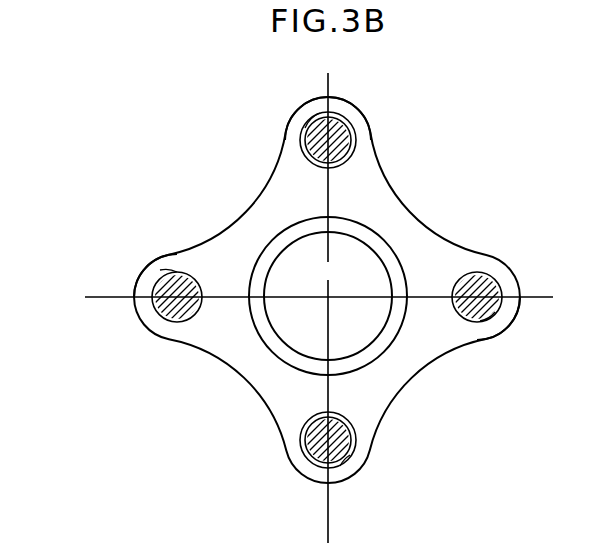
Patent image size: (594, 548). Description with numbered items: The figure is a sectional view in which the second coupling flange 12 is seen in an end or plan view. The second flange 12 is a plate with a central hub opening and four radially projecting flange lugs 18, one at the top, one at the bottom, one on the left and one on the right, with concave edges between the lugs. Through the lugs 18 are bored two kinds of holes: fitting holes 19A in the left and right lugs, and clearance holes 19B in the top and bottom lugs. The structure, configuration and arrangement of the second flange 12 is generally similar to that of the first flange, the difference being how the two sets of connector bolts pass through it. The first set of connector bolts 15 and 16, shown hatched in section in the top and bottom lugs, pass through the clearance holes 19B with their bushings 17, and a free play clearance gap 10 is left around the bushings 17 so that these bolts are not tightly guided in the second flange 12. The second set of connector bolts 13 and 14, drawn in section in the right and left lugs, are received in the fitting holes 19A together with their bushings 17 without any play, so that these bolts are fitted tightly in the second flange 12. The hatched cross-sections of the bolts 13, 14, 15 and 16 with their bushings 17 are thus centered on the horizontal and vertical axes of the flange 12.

The free play clearance gap 10 is at (352, 115).
The second coupling flange 12 is at (262, 372).
The connector bolt 13 is at (500, 285).
The connector bolt 14 is at (152, 305).
The connector bolt 15 is at (343, 140).
The connector bolt 16 is at (350, 460).
The bushing 17 is at (490, 320).
The flange lug 18 is at (340, 103).
The fitting hole 19A is at (165, 268).
The clearance hole 19B is at (305, 126).